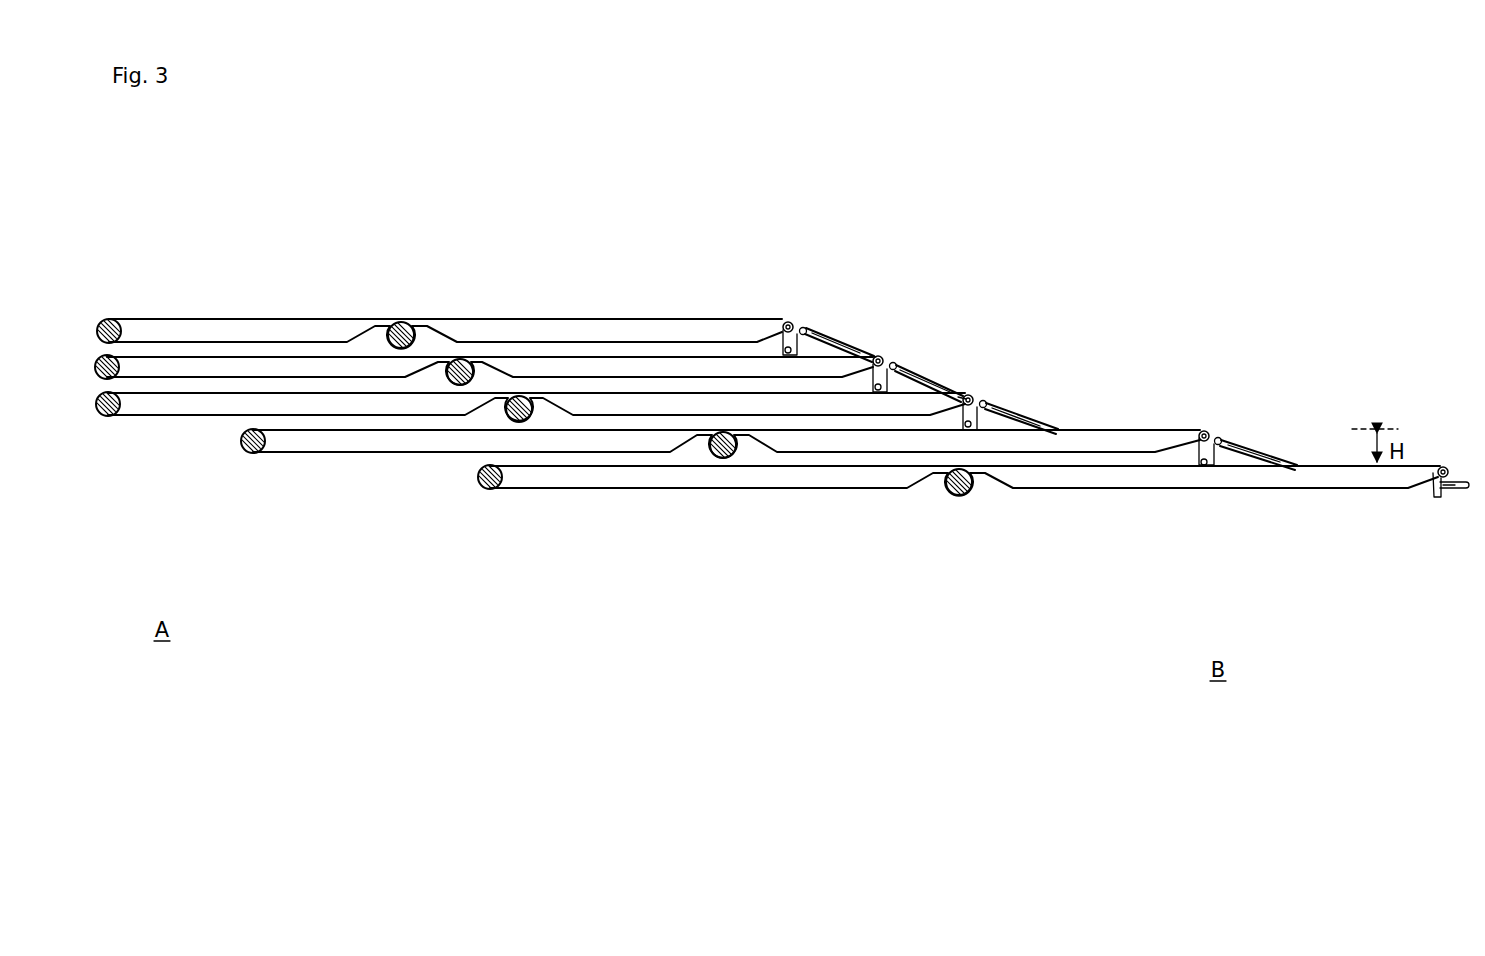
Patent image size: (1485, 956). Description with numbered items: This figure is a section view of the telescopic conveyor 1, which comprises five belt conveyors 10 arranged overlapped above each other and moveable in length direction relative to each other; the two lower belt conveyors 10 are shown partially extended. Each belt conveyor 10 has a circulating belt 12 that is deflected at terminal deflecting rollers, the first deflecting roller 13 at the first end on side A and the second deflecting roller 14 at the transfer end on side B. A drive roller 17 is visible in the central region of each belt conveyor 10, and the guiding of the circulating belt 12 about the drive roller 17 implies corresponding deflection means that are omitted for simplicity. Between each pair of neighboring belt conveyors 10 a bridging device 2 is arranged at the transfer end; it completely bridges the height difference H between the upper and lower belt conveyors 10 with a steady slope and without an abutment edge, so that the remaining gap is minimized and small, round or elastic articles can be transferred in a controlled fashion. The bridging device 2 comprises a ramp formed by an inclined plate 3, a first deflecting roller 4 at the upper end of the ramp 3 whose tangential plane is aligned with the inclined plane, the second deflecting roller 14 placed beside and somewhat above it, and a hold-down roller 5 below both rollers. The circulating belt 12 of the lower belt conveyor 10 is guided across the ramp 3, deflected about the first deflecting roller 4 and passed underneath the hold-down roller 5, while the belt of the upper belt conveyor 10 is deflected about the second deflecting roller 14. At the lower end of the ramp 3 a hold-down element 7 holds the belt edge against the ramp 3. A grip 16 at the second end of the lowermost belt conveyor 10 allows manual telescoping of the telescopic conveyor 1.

The telescopic conveyor 1 is at (571, 200).
The bridging device 2 is at (819, 323).
The ramp 3 is at (830, 338).
The first deflecting roller 4 is at (801, 328).
The hold-down roller 5 is at (786, 348).
The hold-down element 7 is at (882, 353).
The belt conveyor 10 is at (327, 315).
The circulating belt 12 is at (1410, 487).
The first deflecting roller 13 is at (110, 320).
The second deflecting roller 14 is at (788, 322).
The grip 16 is at (1470, 489).
The drive roller 17 is at (402, 322).